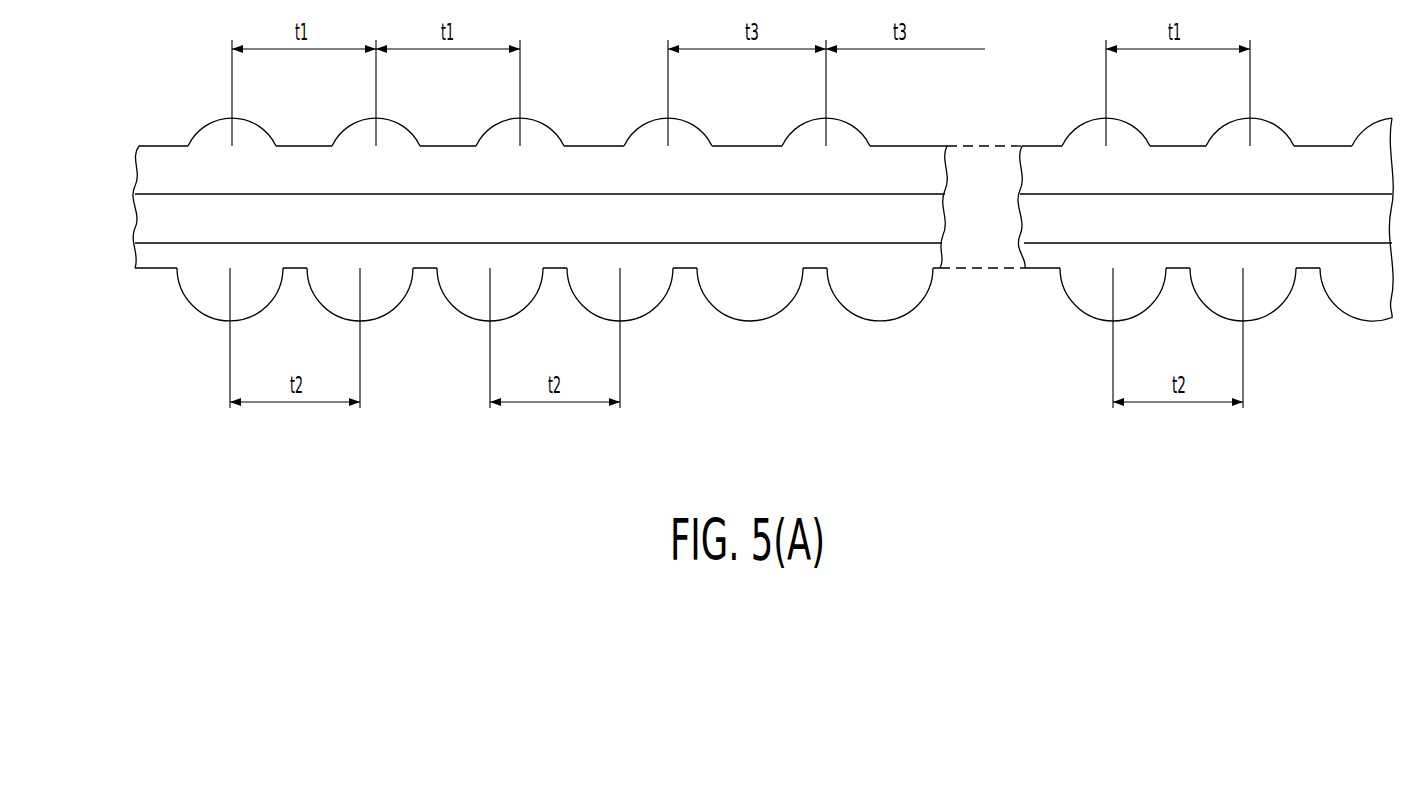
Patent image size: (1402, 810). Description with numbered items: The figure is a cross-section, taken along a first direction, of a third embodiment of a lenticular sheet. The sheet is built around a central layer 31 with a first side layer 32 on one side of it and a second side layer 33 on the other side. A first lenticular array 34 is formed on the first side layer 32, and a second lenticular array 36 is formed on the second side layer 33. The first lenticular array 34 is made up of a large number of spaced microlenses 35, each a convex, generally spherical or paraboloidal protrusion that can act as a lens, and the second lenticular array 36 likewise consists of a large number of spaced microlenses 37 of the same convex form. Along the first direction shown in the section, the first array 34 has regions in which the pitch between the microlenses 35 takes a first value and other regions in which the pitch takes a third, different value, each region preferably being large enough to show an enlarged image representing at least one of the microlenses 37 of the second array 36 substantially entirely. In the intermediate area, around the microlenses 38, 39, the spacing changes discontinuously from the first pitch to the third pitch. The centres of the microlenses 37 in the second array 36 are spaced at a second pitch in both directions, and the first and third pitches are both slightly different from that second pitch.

The central layer 31 is at (160, 220).
The first side layer 32 is at (160, 173).
The second side layer 33 is at (160, 253).
The first lenticular array 34 is at (160, 145).
The microlens 35 is at (198, 130).
The second lenticular array 36 is at (160, 268).
The microlens 37 is at (399, 306).
The microlens 38 is at (541, 140).
The microlens 39 is at (645, 135).